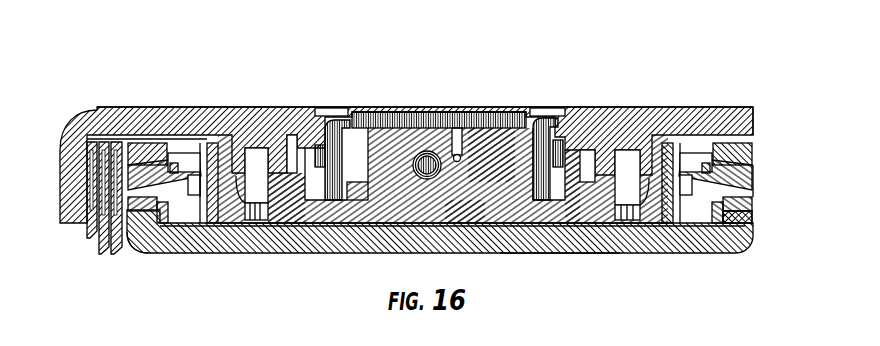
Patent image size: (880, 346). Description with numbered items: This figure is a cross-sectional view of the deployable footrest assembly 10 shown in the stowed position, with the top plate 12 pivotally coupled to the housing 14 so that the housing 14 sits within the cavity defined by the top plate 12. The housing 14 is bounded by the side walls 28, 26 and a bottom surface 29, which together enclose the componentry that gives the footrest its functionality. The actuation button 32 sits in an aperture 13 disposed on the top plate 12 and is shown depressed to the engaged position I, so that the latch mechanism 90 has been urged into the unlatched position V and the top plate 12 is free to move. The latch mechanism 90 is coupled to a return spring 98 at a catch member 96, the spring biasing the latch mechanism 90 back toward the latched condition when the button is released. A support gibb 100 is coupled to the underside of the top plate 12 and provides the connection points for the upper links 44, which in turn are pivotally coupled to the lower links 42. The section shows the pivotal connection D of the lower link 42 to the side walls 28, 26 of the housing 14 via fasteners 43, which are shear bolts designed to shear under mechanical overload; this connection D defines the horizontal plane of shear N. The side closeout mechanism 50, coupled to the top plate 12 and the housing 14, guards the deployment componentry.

The deployable footrest assembly 10 is at (486, 66).
The top plate 12 is at (263, 113).
The aperture 13 is at (340, 110).
The housing 14 is at (762, 232).
The side wall 26 is at (750, 218).
The side wall 28 is at (143, 227).
The bottom surface 29 is at (557, 253).
The actuation button 32 is at (412, 115).
The lower link 42 is at (167, 152).
The shear bolt 43 is at (197, 157).
The upper link 44 is at (253, 157).
The side closeout mechanism 50 is at (93, 252).
The latch mechanism 90 is at (395, 213).
The catch member 96 is at (460, 133).
The return spring 98 is at (463, 152).
The support gibb 100 is at (297, 207).
The pivot point D is at (183, 200).
The engaged position I is at (389, 113).
The shear plane N is at (766, 90).
The unlatched position V is at (465, 212).